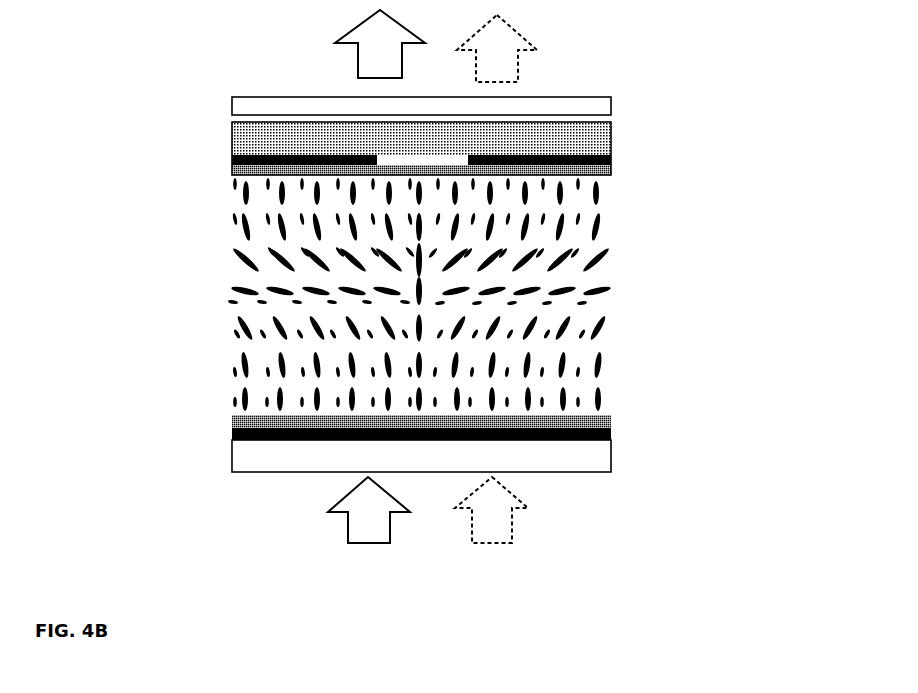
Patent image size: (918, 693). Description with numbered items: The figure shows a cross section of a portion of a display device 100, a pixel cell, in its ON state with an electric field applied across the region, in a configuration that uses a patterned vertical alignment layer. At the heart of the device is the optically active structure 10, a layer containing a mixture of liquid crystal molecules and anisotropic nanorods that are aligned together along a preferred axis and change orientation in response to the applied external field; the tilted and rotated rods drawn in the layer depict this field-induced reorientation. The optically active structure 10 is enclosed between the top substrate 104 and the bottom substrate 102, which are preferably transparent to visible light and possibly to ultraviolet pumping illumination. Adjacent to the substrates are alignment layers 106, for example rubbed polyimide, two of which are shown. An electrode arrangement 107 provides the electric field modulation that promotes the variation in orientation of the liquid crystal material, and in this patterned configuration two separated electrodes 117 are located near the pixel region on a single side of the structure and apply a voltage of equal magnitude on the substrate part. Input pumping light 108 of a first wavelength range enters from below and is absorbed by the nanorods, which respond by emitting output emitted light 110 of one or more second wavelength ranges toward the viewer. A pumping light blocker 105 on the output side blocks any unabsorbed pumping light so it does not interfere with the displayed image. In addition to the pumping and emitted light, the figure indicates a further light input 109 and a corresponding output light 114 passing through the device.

The display device 100 is at (187, 112).
The pumping light blocker 105 is at (612, 107).
The bottom substrate 102 is at (612, 150).
The patterned electrodes 117 is at (232, 155).
The alignment layer 106 is at (232, 173).
The optically active structure 10 is at (233, 360).
The electrode arrangement 107 is at (228, 435).
The top substrate 104 is at (611, 442).
The output emitted light 110 is at (357, 61).
The output light 114 is at (519, 57).
The input pumping light 108 is at (367, 528).
The light input 109 is at (472, 543).